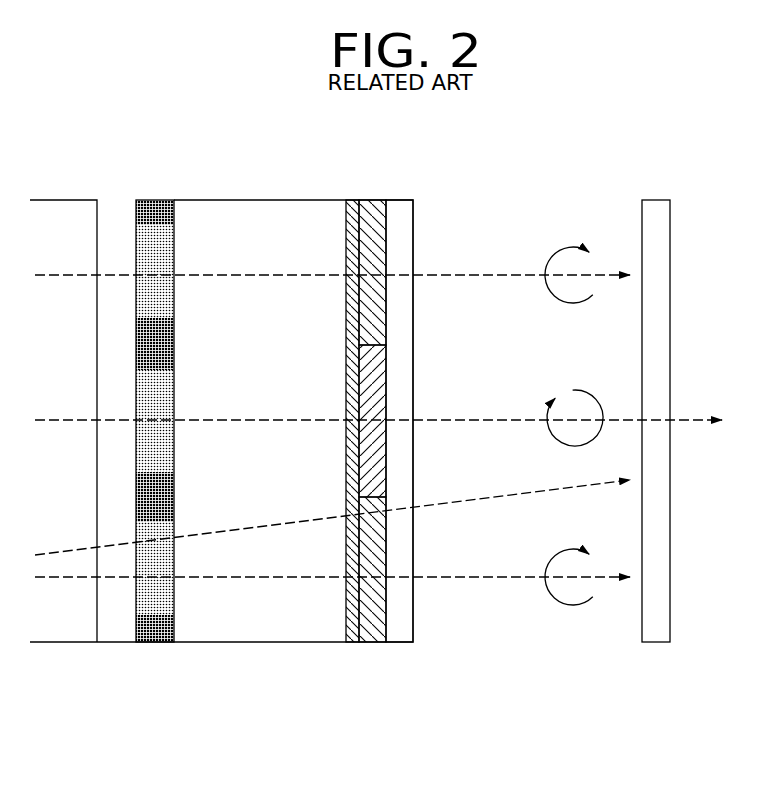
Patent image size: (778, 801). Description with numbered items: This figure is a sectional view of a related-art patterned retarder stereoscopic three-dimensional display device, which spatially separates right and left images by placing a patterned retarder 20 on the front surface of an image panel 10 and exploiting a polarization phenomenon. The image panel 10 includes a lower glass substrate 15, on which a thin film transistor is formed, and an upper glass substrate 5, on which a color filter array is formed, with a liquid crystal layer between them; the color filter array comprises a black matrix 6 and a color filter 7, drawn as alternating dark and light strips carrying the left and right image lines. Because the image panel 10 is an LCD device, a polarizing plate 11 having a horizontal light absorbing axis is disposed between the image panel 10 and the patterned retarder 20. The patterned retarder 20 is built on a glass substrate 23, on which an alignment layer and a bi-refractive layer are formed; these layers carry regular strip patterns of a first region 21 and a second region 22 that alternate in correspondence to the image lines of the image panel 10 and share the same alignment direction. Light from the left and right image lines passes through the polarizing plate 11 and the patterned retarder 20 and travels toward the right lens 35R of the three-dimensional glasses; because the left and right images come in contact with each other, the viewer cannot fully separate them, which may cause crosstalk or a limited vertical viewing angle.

The image panel 10 is at (221, 475).
The lower glass substrate 15 is at (70, 636).
The upper glass substrate 5 is at (266, 636).
The black matrix 6 is at (163, 454).
The color filter 7 is at (172, 612).
The patterned retarder 20 is at (408, 476).
The polarizing plate 11 is at (348, 642).
The first region 21 is at (400, 454).
The second region 22 is at (382, 450).
The glass substrate 23 is at (405, 420).
The right lens 35R is at (655, 638).